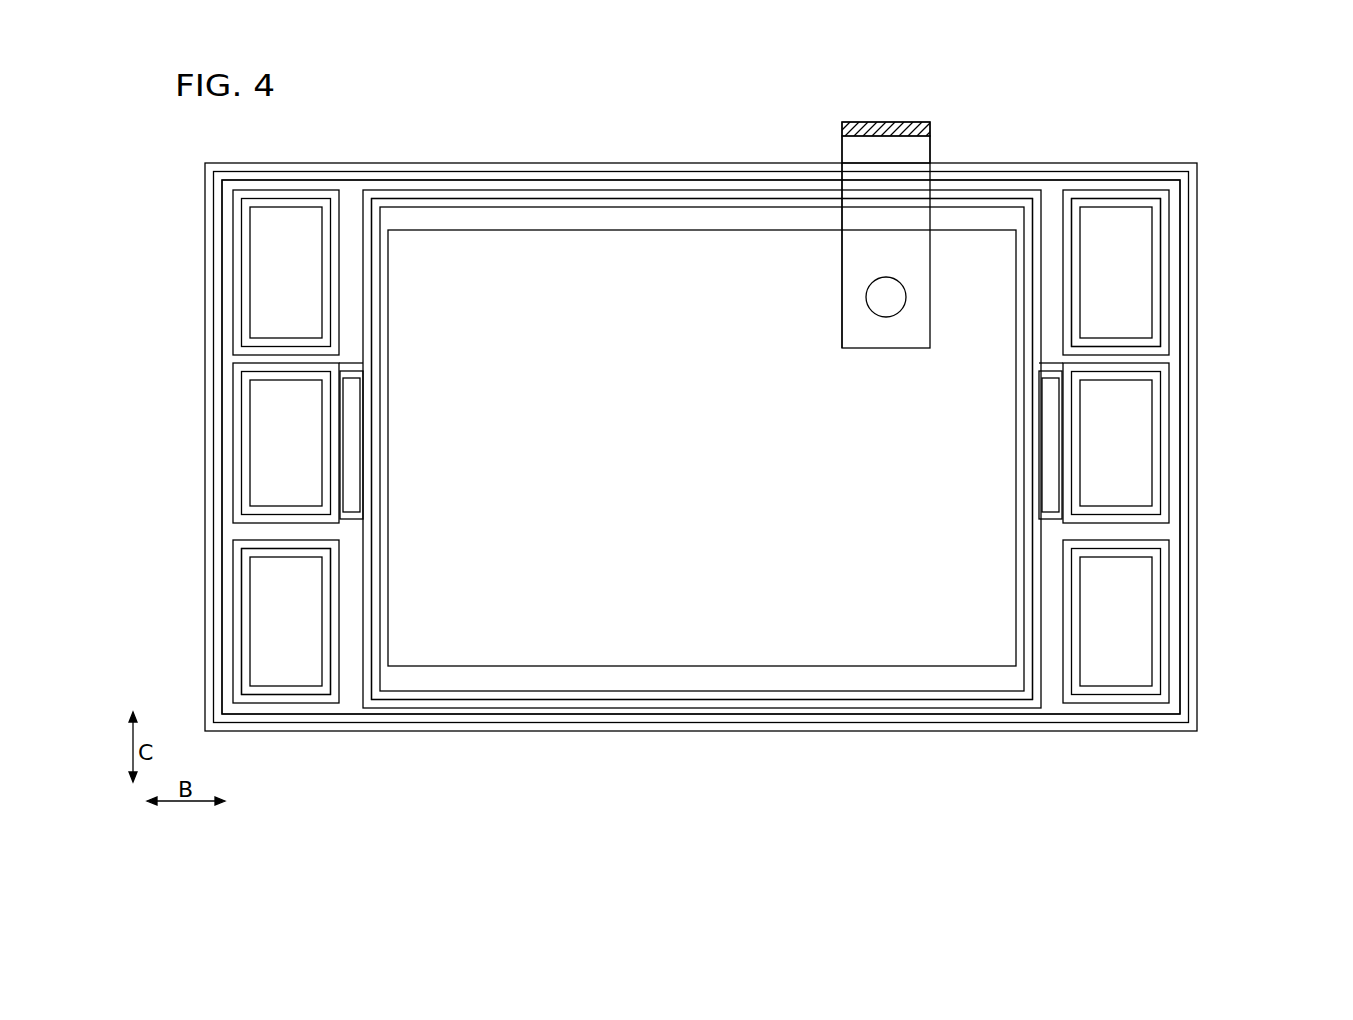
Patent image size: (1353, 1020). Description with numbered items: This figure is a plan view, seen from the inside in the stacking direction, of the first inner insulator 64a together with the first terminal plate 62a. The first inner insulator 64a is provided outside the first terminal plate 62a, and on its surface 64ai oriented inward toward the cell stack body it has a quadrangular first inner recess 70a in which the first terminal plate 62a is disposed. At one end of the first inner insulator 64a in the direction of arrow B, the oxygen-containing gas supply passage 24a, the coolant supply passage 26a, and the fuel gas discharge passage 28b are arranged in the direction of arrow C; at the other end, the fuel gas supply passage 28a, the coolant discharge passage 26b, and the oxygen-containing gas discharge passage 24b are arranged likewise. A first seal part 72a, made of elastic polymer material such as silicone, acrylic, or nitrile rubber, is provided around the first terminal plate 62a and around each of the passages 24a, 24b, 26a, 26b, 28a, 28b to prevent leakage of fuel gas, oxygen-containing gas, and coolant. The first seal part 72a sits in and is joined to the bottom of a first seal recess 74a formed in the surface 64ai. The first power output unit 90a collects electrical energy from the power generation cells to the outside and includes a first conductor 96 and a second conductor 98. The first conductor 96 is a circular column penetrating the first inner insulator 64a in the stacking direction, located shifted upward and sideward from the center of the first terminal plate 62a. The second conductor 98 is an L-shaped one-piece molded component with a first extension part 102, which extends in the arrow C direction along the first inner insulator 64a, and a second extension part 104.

The oxygen-containing gas supply passage 24a is at (268, 246).
The oxygen-containing gas discharge passage 24b is at (1138, 614).
The coolant supply passage 26a is at (268, 433).
The coolant discharge passage 26b is at (1137, 462).
The fuel gas supply passage 28a is at (1135, 245).
The fuel gas discharge passage 28b is at (268, 660).
The first terminal plate 62a is at (685, 247).
The first inner insulator 64a is at (1144, 163).
The surface 64ai is at (567, 220).
The first inner recess 70a is at (682, 666).
The first seal part 72a is at (289, 520).
The first seal recess 74a is at (240, 547).
The first power output unit 90a is at (930, 122).
The first conductor 96 is at (883, 342).
The second conductor 98 is at (842, 122).
The first extension part 102 is at (915, 150).
The second extension part 104 is at (878, 122).